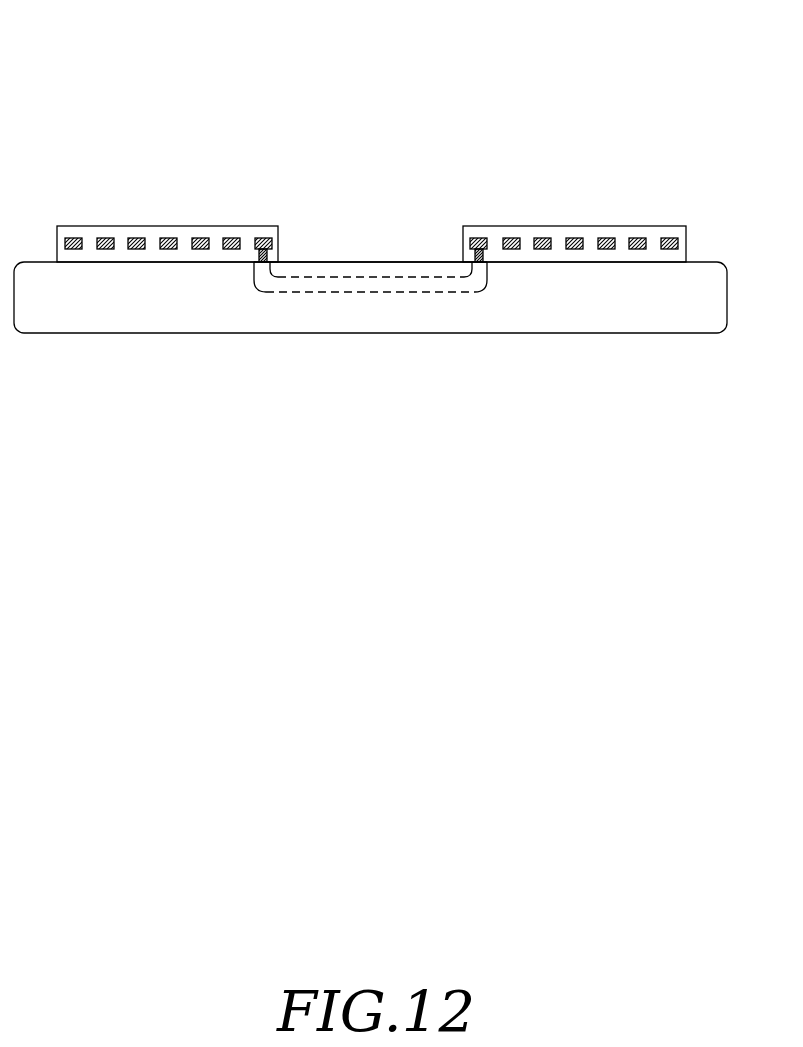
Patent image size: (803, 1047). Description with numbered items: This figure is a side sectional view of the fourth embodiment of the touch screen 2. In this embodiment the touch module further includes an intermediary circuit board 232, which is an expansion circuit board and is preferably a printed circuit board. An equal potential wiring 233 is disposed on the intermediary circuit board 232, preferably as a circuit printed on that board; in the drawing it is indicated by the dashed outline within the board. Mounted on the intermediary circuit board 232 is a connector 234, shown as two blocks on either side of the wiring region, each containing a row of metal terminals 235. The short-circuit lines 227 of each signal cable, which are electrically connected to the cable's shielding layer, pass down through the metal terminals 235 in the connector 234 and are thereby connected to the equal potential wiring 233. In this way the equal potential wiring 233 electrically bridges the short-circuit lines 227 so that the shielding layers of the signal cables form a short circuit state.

The touch screen 2 is at (356, 116).
The short-circuit line 227 is at (268, 252).
The intermediary circuit board 232 is at (583, 295).
The equal potential wiring 233 is at (383, 293).
The connector 234 is at (115, 225).
The metal terminal 235 is at (273, 252).